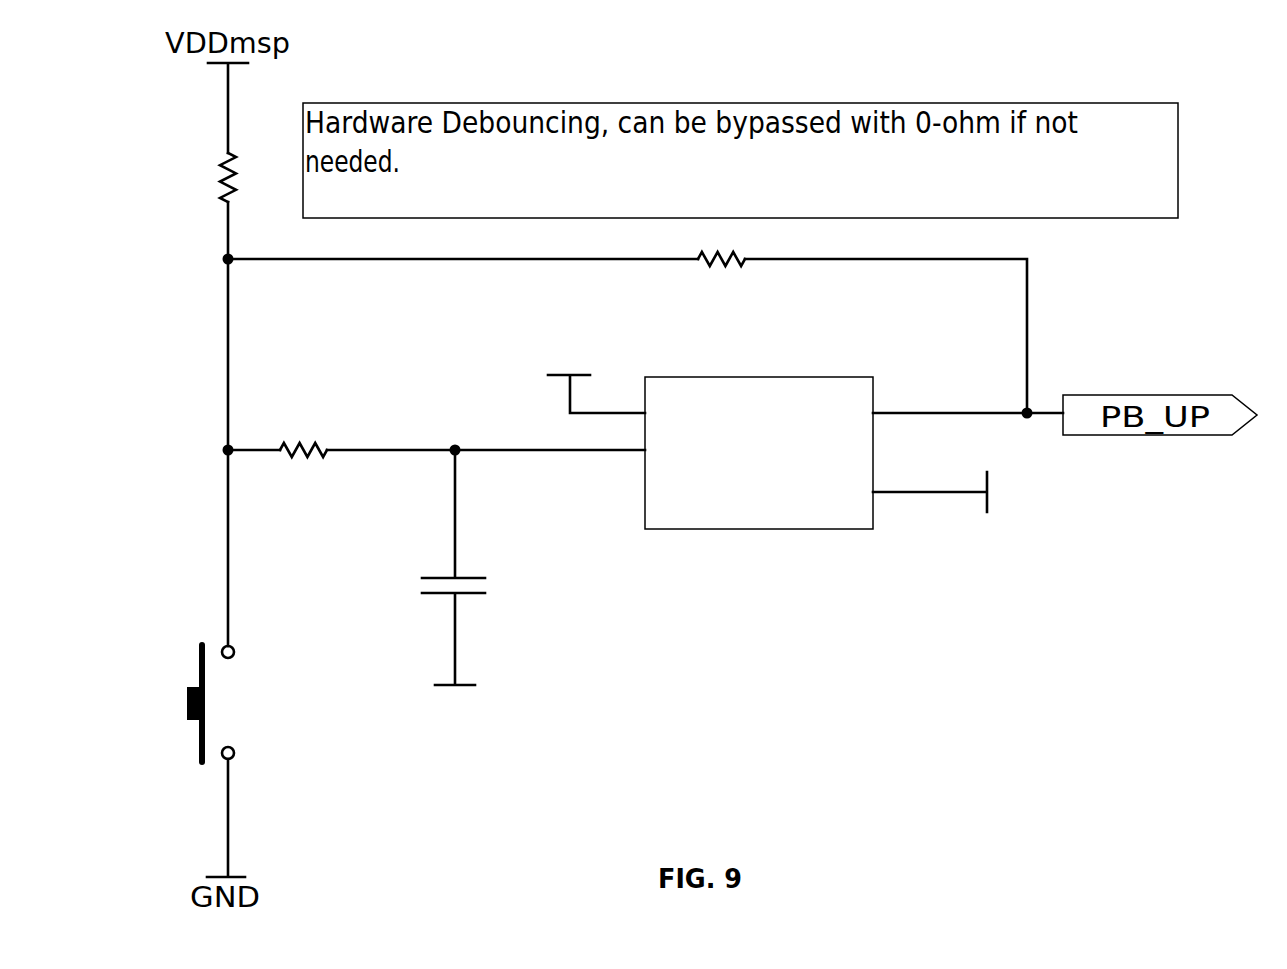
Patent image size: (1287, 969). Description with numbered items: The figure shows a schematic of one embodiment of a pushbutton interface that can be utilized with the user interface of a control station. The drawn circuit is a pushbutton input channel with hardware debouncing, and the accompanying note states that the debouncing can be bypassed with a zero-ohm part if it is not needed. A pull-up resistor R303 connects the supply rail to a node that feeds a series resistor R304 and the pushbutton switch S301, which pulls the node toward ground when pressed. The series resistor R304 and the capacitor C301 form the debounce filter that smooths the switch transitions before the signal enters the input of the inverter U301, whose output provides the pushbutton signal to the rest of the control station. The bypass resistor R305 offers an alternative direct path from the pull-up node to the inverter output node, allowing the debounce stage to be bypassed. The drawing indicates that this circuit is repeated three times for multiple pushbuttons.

The pull-up resistor 6.2k R303 is at (263, 156).
The debounce series resistor 16.5k R304 is at (310, 438).
The 0-ohm bypass resistor R305 is at (725, 256).
The debounce capacitor 1uF C301 is at (487, 585).
The Schmitt-trigger inverter SN74LVC1G14DCKR U301 is at (828, 457).
The push-button switch SW-PB S301 is at (262, 703).